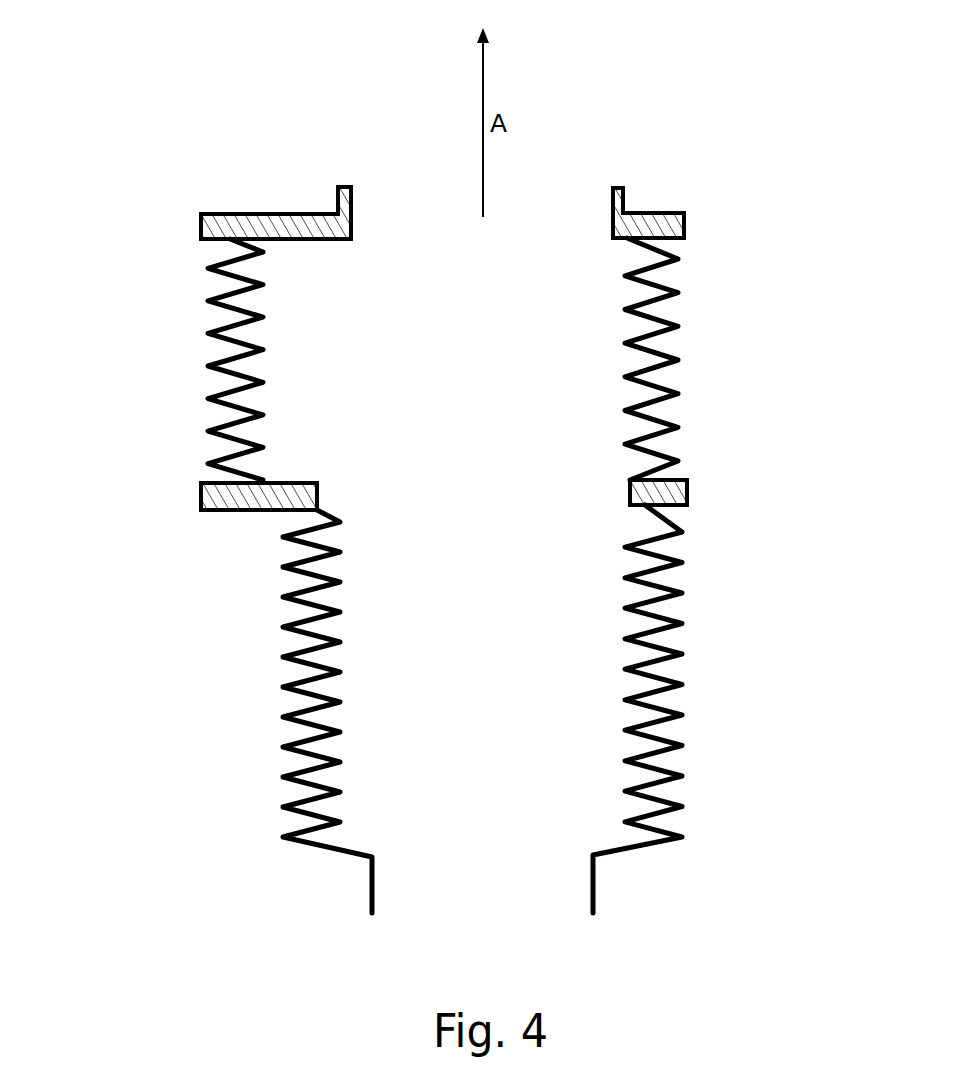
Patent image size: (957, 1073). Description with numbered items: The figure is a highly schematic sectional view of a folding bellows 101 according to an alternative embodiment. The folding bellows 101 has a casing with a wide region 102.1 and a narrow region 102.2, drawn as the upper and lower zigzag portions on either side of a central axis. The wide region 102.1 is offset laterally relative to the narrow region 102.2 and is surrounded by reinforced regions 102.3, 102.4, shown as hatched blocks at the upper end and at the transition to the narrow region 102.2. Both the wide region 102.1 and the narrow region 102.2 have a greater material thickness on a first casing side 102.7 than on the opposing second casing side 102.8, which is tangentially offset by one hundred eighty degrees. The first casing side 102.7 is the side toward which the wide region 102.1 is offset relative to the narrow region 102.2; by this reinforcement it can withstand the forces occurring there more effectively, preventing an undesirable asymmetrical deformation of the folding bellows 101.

The folding bellows 101 is at (192, 312).
The first casing side 102.7 is at (163, 451).
The second casing side 102.8 is at (752, 435).
The reinforced region 102.4 is at (696, 202).
The wide region 102.1 is at (692, 348).
The reinforced region 102.3 is at (703, 492).
The narrow region 102.2 is at (698, 745).